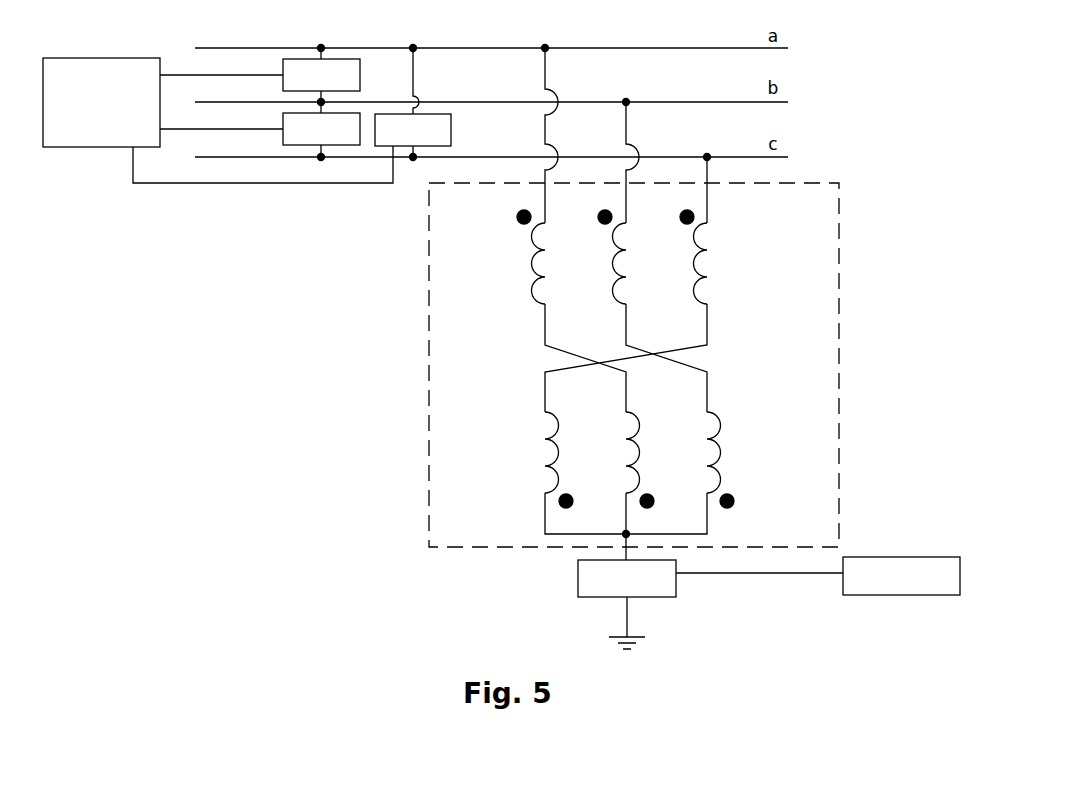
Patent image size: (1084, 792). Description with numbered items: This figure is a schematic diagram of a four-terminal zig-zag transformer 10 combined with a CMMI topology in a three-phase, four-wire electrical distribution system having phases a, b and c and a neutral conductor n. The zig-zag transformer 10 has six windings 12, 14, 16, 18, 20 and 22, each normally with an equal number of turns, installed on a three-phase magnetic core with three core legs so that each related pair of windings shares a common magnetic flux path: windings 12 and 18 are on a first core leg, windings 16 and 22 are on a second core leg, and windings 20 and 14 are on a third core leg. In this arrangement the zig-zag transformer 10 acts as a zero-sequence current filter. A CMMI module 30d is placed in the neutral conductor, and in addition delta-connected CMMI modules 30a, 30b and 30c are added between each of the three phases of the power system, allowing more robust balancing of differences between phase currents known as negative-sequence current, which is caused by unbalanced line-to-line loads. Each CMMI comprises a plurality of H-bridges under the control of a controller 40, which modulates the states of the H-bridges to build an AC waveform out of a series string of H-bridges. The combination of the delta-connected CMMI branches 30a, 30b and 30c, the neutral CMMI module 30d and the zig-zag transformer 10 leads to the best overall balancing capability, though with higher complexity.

The zig-zag transformer 10 is at (684, 303).
The winding 12 is at (520, 271).
The winding 14 is at (736, 459).
The winding 16 is at (600, 271).
The winding 18 is at (538, 459).
The winding 20 is at (717, 271).
The winding 22 is at (655, 459).
The delta-connected CMMI module 30a is at (271, 73).
The delta-connected CMMI module 30b is at (271, 144).
The delta-connected CMMI module 30c is at (463, 135).
The CMMI module 30d is at (567, 585).
The controller 40 is at (98, 161).